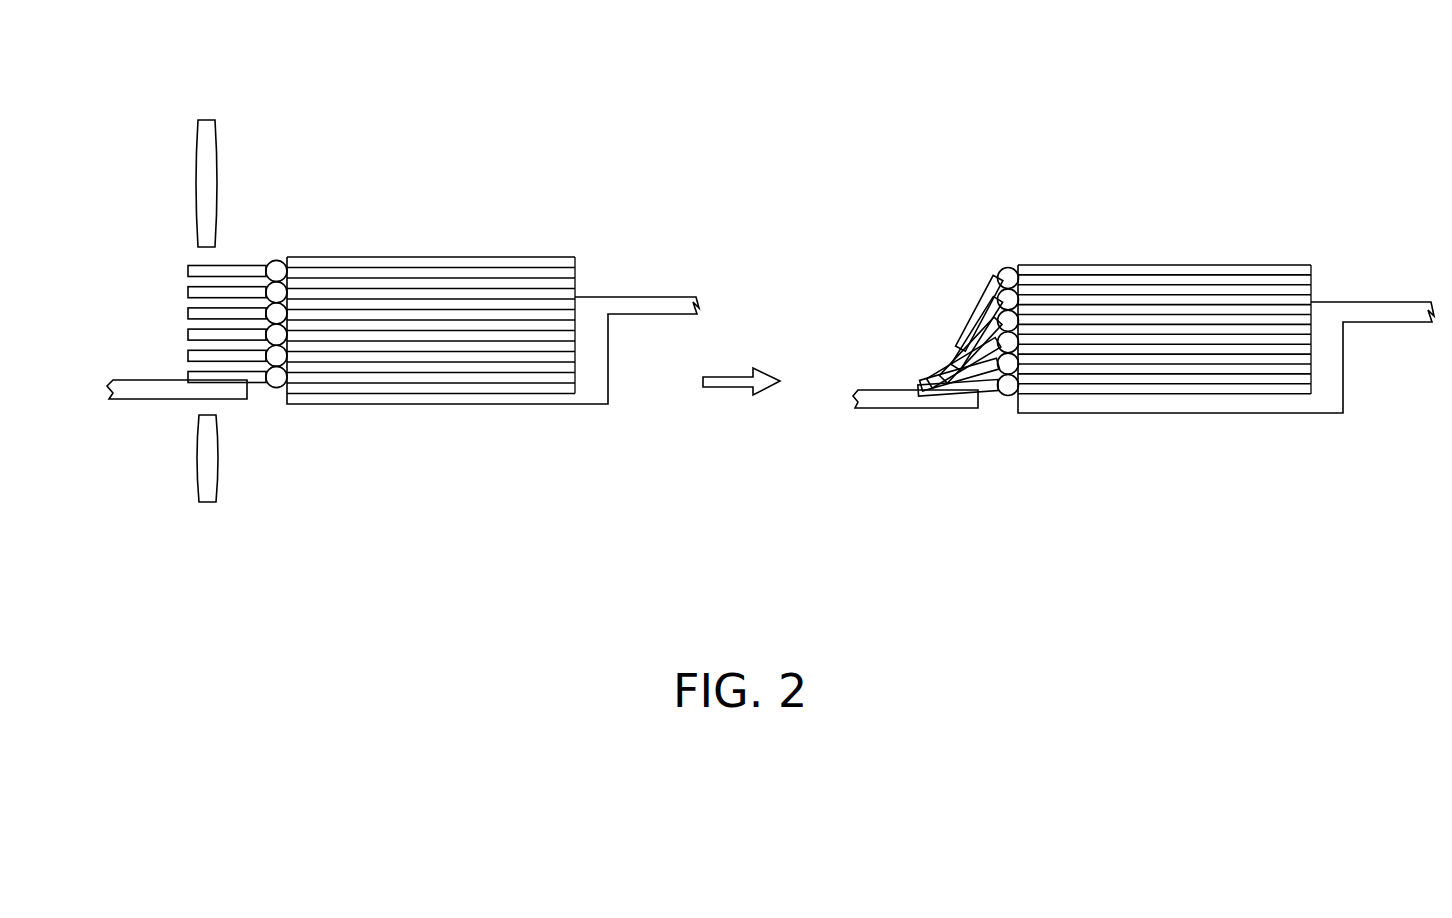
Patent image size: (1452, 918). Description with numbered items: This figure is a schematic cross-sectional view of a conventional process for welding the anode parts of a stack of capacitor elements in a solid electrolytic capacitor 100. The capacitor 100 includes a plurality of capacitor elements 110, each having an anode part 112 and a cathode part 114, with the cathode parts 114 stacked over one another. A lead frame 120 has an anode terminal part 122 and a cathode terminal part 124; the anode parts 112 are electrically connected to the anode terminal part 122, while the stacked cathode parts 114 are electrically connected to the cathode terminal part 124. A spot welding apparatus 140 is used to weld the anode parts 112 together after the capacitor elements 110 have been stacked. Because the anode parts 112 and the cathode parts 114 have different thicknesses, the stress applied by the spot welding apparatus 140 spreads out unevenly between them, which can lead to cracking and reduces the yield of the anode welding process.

The solid electrolytic capacitor 100 is at (557, 576).
The capacitor element 110 is at (568, 272).
The anode part 112 is at (187, 268).
The cathode part 114 is at (432, 256).
The lead frame 120 is at (282, 566).
The anode terminal part 122 is at (168, 388).
The cathode terminal part 124 is at (332, 393).
The spot welding apparatus 140 is at (209, 121).